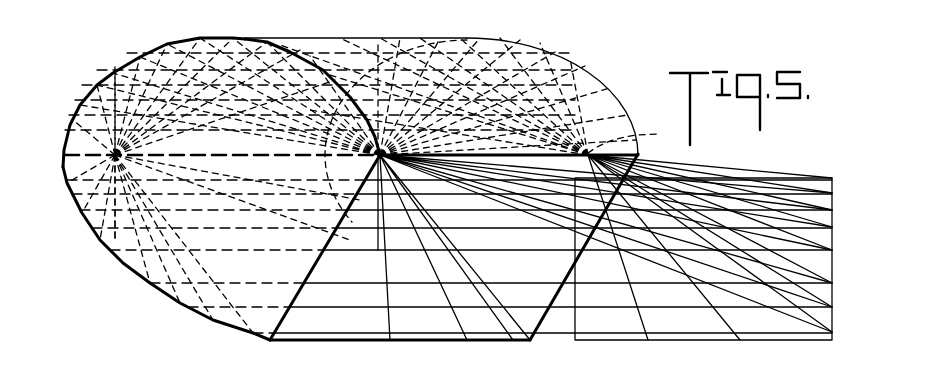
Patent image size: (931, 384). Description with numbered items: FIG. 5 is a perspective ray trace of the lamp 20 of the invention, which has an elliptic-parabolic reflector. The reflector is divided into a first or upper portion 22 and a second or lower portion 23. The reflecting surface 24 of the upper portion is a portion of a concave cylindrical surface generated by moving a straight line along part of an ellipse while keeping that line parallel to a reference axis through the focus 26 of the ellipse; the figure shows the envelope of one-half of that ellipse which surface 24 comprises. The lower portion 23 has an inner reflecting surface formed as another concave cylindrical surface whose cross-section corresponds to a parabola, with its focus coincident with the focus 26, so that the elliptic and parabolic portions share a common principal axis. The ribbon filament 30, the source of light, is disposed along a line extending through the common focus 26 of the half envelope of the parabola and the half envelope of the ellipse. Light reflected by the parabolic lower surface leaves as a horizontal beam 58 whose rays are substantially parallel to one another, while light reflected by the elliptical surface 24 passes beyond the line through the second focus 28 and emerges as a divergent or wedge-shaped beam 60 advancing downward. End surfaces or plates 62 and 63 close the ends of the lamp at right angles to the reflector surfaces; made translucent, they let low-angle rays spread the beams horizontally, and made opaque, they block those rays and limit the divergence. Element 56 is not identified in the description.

The lamp 20 is at (90, 70).
The first or upper portion 22 is at (632, 97).
The second or lower portion 23 is at (190, 314).
The reflecting surface 24 is at (262, 40).
The focus 26 is at (66, 181).
The focus 28 is at (534, 139).
The ribbon filament 30 is at (165, 157).
The top edge 56 is at (440, 77).
The horizontal beam 58 is at (613, 303).
The divergent or wedge-shaped beam 60 is at (385, 320).
The end surface or plate 62 is at (267, 293).
The end surface or plate 63 is at (528, 323).